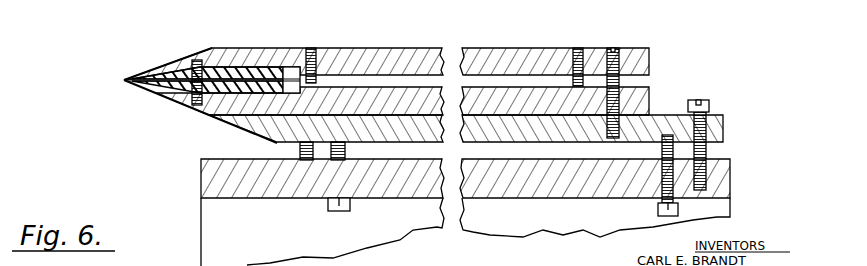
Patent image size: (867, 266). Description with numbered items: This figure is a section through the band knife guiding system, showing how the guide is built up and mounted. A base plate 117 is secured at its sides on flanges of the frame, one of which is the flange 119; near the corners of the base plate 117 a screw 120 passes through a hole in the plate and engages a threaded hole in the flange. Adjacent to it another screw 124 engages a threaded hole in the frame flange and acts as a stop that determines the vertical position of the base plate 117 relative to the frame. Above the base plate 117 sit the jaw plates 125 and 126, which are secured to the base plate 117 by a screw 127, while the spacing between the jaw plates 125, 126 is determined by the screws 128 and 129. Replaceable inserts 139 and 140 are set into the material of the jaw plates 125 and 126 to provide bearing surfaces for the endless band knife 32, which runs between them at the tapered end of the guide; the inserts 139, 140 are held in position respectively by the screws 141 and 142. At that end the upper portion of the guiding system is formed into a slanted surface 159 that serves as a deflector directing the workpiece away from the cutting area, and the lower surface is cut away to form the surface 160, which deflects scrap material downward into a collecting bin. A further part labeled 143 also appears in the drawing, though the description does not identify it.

The band knife 32 is at (130, 79).
The base plate 117 is at (723, 126).
The flange 119 is at (534, 183).
The screw 120 is at (703, 100).
The screw 124 is at (656, 203).
The jaw plate 125 is at (649, 50).
The jaw plate 126 is at (649, 88).
The screw 127 is at (614, 48).
The screw 128 is at (578, 48).
The screw 129 is at (312, 50).
The replaceable insert 139 is at (249, 66).
The replaceable insert 140 is at (281, 84).
The screw 141 is at (198, 60).
The screw 142 is at (196, 106).
The member 143 is at (491, 5).
The slanted surface 159 is at (182, 62).
The surface 160 is at (173, 102).